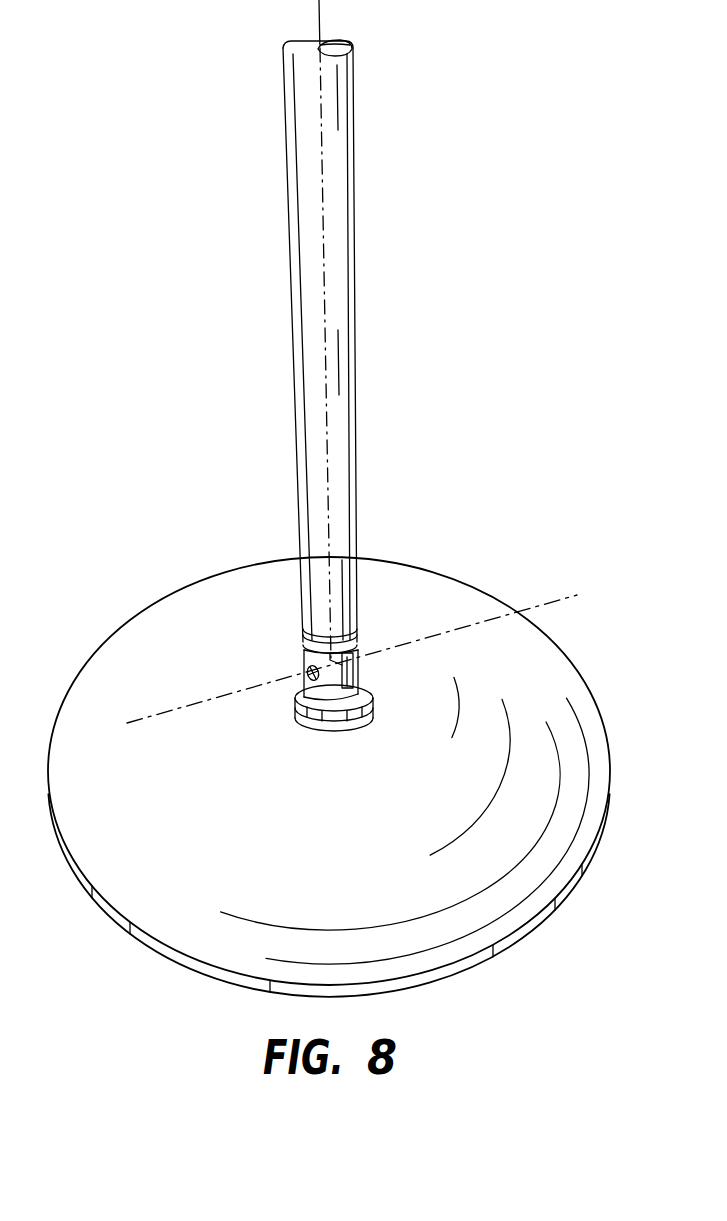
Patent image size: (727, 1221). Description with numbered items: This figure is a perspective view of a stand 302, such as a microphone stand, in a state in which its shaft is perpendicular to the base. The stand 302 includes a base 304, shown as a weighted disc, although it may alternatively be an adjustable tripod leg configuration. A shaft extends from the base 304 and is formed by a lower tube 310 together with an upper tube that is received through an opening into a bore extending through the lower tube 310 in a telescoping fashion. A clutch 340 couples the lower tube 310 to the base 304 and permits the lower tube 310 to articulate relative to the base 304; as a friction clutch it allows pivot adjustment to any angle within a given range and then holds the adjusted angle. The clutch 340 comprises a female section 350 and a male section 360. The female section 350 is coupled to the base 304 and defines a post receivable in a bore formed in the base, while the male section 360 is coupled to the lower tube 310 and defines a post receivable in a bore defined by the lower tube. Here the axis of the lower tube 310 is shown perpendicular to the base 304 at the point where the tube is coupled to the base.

The stand 302 is at (348, 498).
The lower tube 310 is at (313, 428).
The clutch 340 is at (278, 668).
The female section 350 is at (302, 707).
The male section 360 is at (355, 667).
The base 304 is at (524, 684).